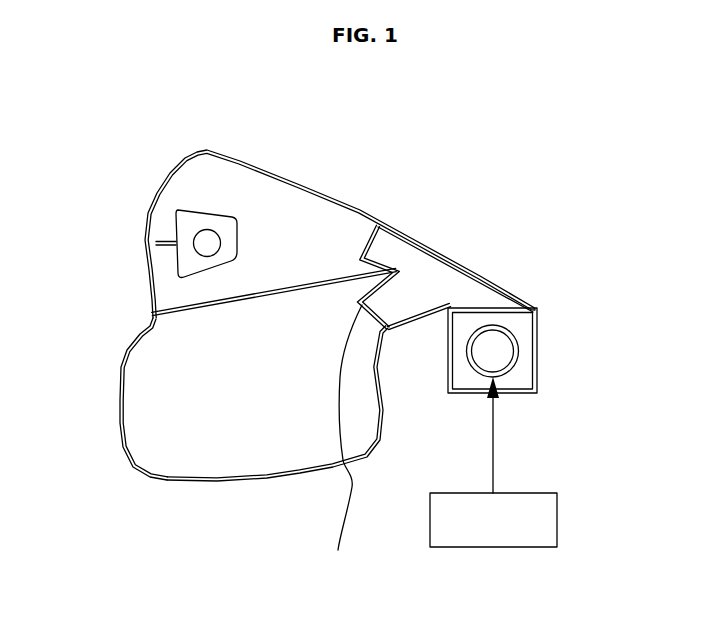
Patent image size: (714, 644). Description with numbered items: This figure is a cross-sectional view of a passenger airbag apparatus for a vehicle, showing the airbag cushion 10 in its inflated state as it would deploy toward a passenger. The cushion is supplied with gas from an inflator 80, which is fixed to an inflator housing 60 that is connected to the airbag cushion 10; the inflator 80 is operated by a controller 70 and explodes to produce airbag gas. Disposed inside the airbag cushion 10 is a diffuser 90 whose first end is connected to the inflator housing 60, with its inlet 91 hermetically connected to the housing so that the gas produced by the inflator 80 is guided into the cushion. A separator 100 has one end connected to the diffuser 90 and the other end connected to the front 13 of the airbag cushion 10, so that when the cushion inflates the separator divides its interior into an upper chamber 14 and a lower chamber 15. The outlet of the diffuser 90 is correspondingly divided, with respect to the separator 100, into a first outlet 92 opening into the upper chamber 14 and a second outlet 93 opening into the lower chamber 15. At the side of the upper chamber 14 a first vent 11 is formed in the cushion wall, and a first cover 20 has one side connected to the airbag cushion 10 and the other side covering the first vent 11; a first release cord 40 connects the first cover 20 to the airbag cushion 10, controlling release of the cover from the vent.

The airbag cushion 10 is at (238, 150).
The first vent 11 is at (194, 238).
The front 13 is at (121, 358).
The upper chamber 14 is at (280, 232).
The lower chamber 15 is at (243, 433).
The first cover 20 is at (202, 210).
The first release cord 40 is at (162, 247).
The inflator housing 60 is at (538, 387).
The controller 70 is at (517, 548).
The inflator 80 is at (519, 348).
The diffuser 90 is at (445, 262).
The inlet 91 is at (495, 302).
The first outlet 92 is at (363, 236).
The second outlet 93 is at (342, 440).
The separator 100 is at (210, 311).